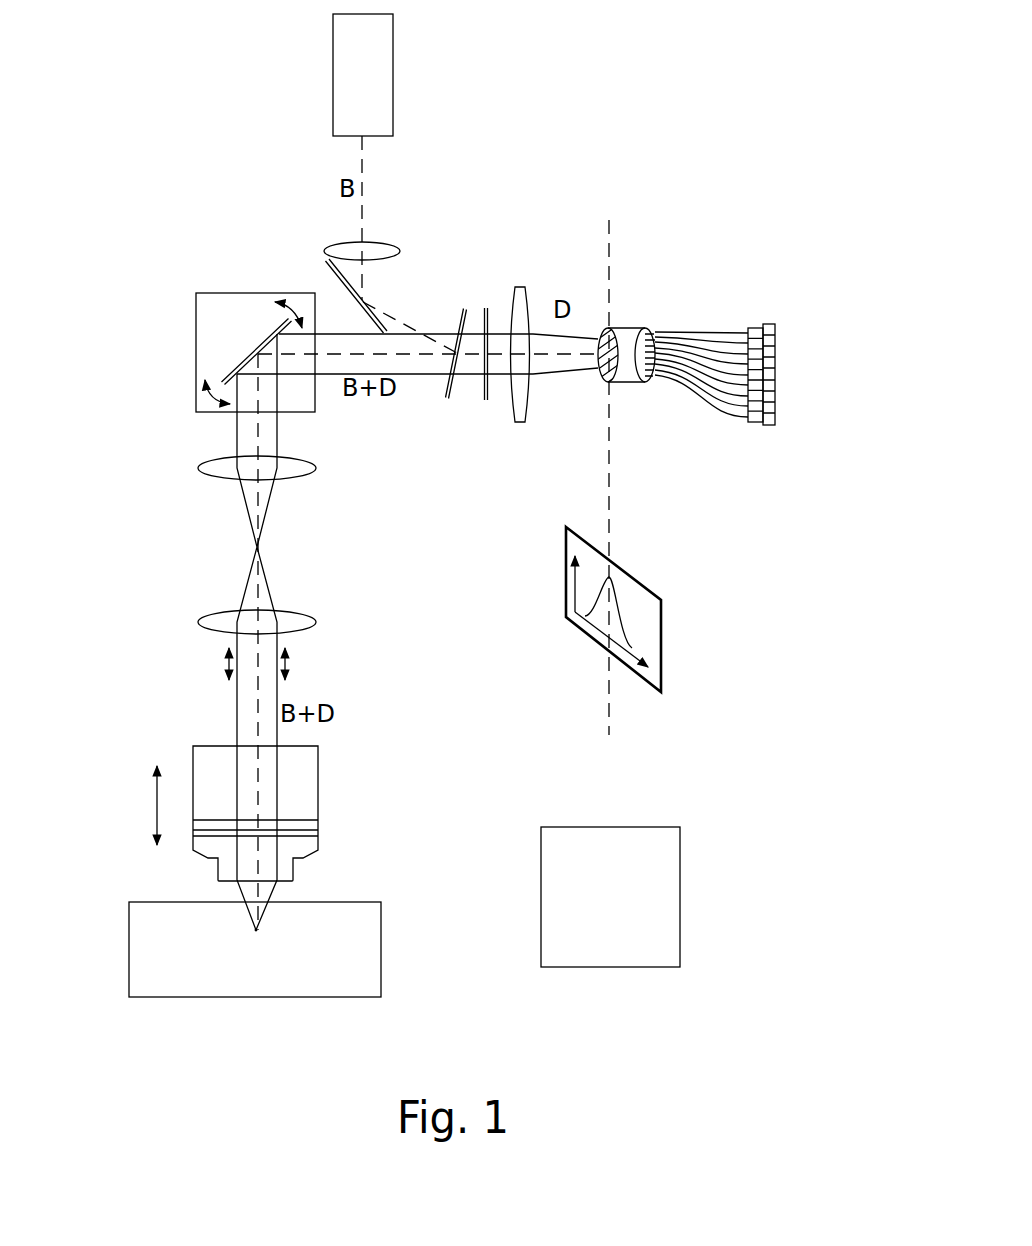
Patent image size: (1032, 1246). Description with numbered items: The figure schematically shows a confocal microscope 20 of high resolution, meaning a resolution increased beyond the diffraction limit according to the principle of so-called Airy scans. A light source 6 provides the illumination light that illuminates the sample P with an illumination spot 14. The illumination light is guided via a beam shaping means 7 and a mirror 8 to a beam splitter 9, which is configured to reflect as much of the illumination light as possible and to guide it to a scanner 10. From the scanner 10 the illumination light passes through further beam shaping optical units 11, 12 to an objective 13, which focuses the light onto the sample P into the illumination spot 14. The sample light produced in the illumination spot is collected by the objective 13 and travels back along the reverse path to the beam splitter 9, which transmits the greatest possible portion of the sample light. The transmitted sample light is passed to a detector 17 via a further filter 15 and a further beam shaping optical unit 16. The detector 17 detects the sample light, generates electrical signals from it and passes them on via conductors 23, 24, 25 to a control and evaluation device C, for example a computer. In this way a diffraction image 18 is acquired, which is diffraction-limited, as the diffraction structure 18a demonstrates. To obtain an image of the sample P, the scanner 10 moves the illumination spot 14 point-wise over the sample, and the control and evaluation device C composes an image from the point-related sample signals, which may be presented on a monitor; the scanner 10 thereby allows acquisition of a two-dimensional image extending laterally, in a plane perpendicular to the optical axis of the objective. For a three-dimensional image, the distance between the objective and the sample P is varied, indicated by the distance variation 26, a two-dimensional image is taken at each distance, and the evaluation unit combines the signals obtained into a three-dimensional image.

The light source 6 is at (393, 75).
The beam shaping means 7 is at (385, 248).
The mirror 8 is at (337, 282).
The beam splitter 9 is at (447, 400).
The scanner 10 is at (218, 293).
The beam shaping optical unit 11 is at (316, 466).
The beam shaping optical unit 12 is at (316, 620).
The objective 13 is at (318, 786).
The illumination spot 14 is at (256, 930).
The filter 15 is at (490, 296).
The beam shaping optical unit 16 is at (520, 420).
The detector 17 is at (613, 330).
The diffraction image 18 is at (612, 410).
The diffraction structure 18a is at (615, 594).
The confocal microscope 20 is at (128, 128).
The conductor 23 is at (766, 319).
The conductor 24 is at (766, 319).
The conductor 25 is at (773, 297).
The objective distance variation 26 is at (156, 800).
The sample P is at (365, 955).
The control and evaluation device C is at (610, 897).